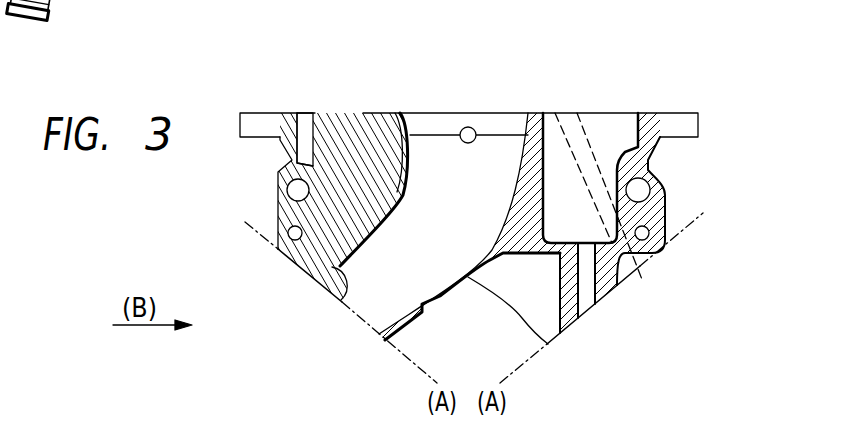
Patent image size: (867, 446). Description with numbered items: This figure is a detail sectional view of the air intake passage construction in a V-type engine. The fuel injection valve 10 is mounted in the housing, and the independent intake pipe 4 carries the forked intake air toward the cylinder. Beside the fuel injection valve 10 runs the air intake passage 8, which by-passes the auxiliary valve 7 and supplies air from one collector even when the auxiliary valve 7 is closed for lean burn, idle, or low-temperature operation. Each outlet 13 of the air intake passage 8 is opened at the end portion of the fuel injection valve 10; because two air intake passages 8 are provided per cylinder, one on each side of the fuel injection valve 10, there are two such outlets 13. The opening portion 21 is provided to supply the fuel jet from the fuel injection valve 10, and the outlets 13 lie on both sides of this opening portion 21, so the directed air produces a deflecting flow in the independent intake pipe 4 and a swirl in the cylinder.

The independent intake pipe 4 is at (430, 278).
The auxiliary valve 7 is at (487, 136).
The air intake passage 8 is at (395, 128).
The fuel injection valve 10 is at (281, 170).
The outlet 13 is at (313, 267).
The opening portion 21 is at (348, 283).